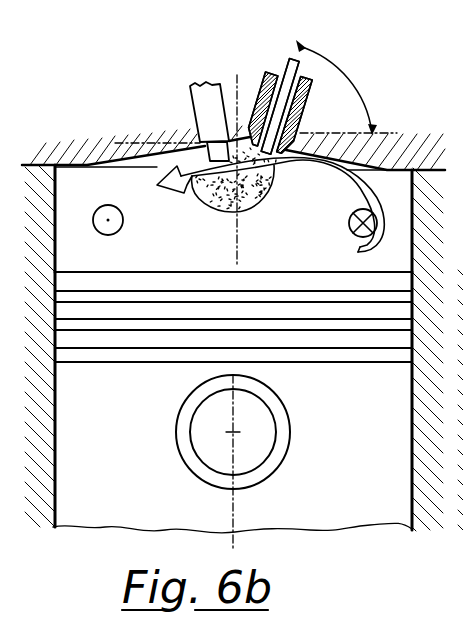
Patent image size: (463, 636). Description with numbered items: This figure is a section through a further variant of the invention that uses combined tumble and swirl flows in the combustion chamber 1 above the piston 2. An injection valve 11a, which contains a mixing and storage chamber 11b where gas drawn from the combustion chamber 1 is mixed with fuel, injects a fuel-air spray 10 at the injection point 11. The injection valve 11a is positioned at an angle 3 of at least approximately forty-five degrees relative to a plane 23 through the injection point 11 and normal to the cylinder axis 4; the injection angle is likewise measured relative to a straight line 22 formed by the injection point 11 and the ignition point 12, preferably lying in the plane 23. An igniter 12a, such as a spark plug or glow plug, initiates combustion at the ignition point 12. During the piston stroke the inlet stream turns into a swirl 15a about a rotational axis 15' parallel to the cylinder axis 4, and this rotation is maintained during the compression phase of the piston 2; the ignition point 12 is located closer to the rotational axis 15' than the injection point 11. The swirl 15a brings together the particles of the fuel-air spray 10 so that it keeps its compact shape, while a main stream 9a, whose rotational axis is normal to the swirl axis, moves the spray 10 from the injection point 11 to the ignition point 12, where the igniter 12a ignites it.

The combustion chamber 1 is at (152, 255).
The piston 2 is at (363, 467).
The angle 3 is at (350, 73).
The cylinder axis 4 is at (237, 500).
The main stream 9a is at (302, 166).
The fuel-air spray 10 is at (209, 199).
The injection point 11 is at (289, 133).
The injection valve 11a is at (264, 76).
The mixing and storage chamber 11b is at (282, 73).
The ignition point 12 is at (210, 108).
The igniter 12a is at (193, 102).
The swirl 15a is at (100, 211).
The rotational axis 15' is at (276, 171).
The straight line 22 is at (140, 139).
The plane 23 is at (390, 128).